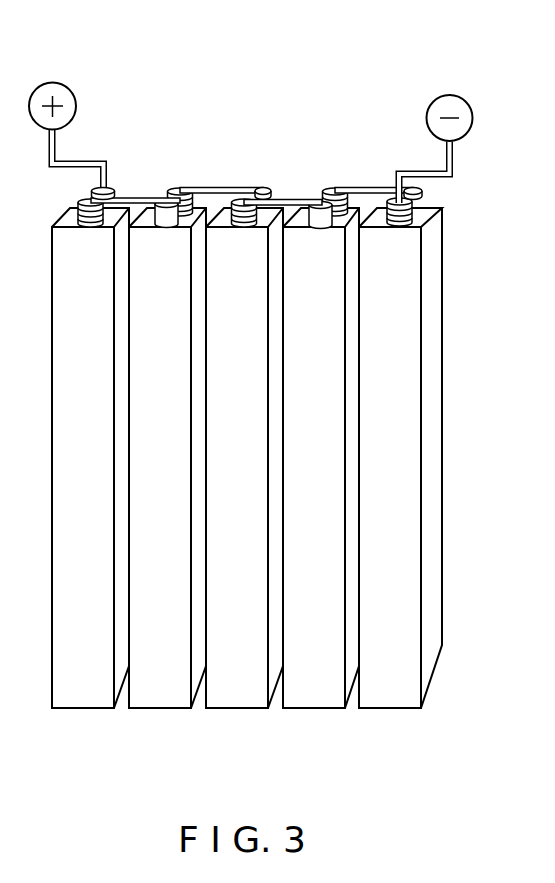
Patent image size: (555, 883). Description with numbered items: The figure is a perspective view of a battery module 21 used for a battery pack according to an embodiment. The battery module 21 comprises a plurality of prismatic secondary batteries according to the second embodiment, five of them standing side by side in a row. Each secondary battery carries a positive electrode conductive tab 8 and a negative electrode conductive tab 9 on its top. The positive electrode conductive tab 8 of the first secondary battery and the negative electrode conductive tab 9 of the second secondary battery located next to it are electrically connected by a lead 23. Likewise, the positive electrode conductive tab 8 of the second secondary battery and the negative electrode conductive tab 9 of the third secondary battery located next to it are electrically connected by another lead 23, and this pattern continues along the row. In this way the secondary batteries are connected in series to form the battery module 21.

The battery module 21 is at (255, 411).
The lead 23 is at (221, 186).
The positive electrode conductive tab 8 is at (324, 189).
The negative electrode conductive tab 9 is at (332, 187).